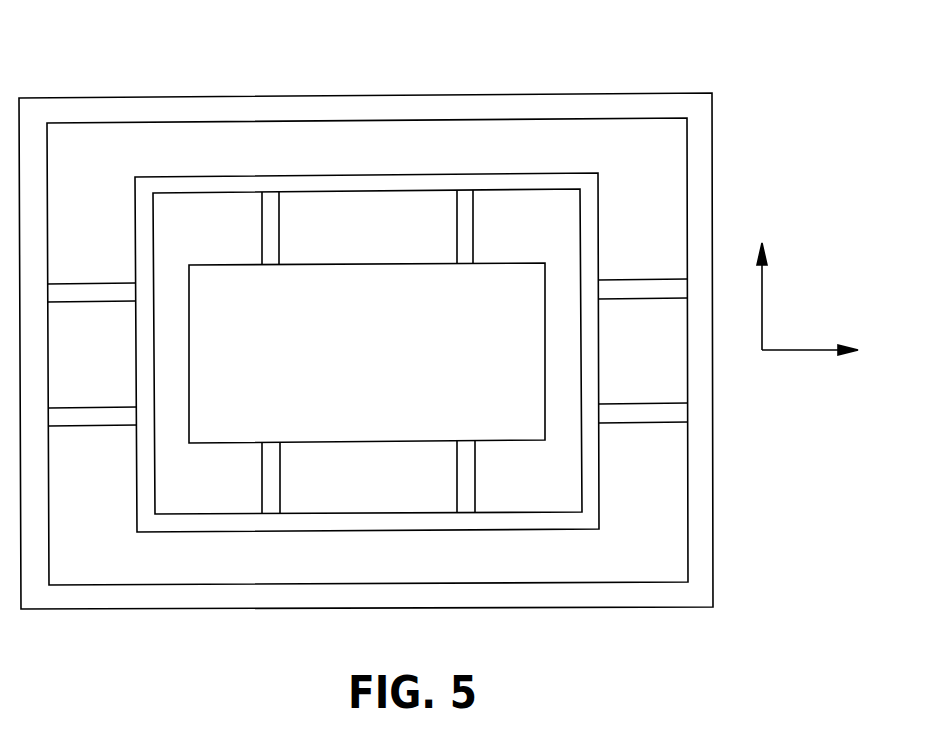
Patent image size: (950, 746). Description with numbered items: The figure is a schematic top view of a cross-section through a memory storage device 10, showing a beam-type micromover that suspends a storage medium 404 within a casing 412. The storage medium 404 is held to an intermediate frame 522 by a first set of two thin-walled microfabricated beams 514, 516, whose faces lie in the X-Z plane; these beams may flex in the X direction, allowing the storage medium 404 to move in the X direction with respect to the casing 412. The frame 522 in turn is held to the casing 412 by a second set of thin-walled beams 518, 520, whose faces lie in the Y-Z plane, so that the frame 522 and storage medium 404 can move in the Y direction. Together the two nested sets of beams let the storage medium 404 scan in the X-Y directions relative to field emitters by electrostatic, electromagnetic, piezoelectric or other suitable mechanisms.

The MEMS device / tiltable platform assembly 10 is at (778, 80).
The storage medium 404 is at (387, 365).
The casing 412 is at (705, 509).
The thin-walled microfabricated beam 514 is at (279, 240).
The thin-walled microfabricated beam 516 is at (473, 235).
The thin-walled microfabricated beam 518 is at (643, 278).
The thin-walled microfabricated beam 520 is at (641, 423).
The frame 522 is at (600, 208).